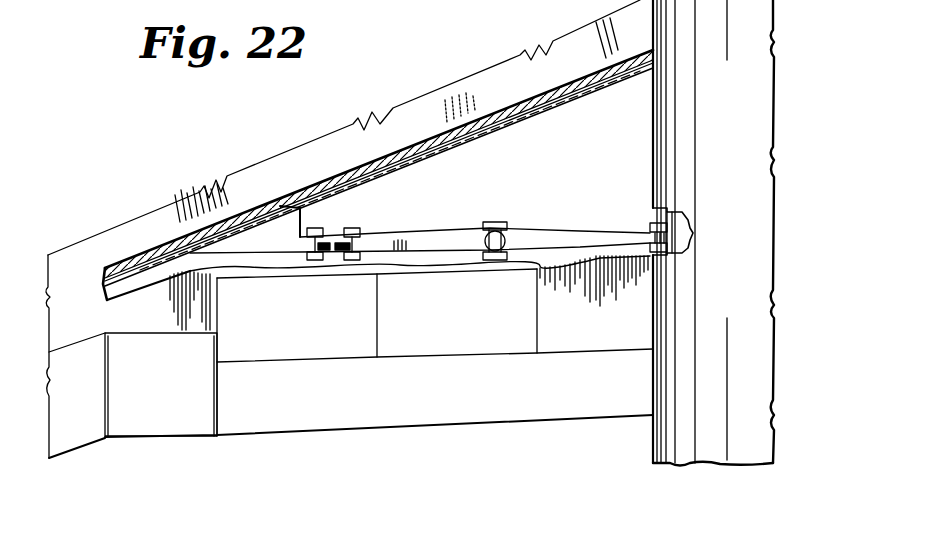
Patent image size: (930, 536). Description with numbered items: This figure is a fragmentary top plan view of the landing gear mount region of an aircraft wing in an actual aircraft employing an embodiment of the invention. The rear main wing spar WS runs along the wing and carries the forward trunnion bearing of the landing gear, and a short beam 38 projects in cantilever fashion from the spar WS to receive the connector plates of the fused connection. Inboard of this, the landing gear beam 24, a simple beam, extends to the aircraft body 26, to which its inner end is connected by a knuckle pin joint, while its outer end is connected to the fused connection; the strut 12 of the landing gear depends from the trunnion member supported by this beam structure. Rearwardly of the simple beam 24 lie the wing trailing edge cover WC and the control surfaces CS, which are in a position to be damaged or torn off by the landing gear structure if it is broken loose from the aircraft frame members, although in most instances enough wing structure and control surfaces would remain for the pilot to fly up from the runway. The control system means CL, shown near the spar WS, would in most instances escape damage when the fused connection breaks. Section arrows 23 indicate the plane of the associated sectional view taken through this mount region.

The strut 12 is at (500, 222).
The landing gear beam 24 is at (640, 205).
The aircraft body 26 is at (670, 398).
The short beam 38 is at (278, 240).
The section line 23- 23 is at (133, 250).
The rear main wing spar WS is at (476, 140).
The control system means CL is at (430, 156).
The wing cover WC is at (172, 313).
The control surfaces CS is at (333, 420).